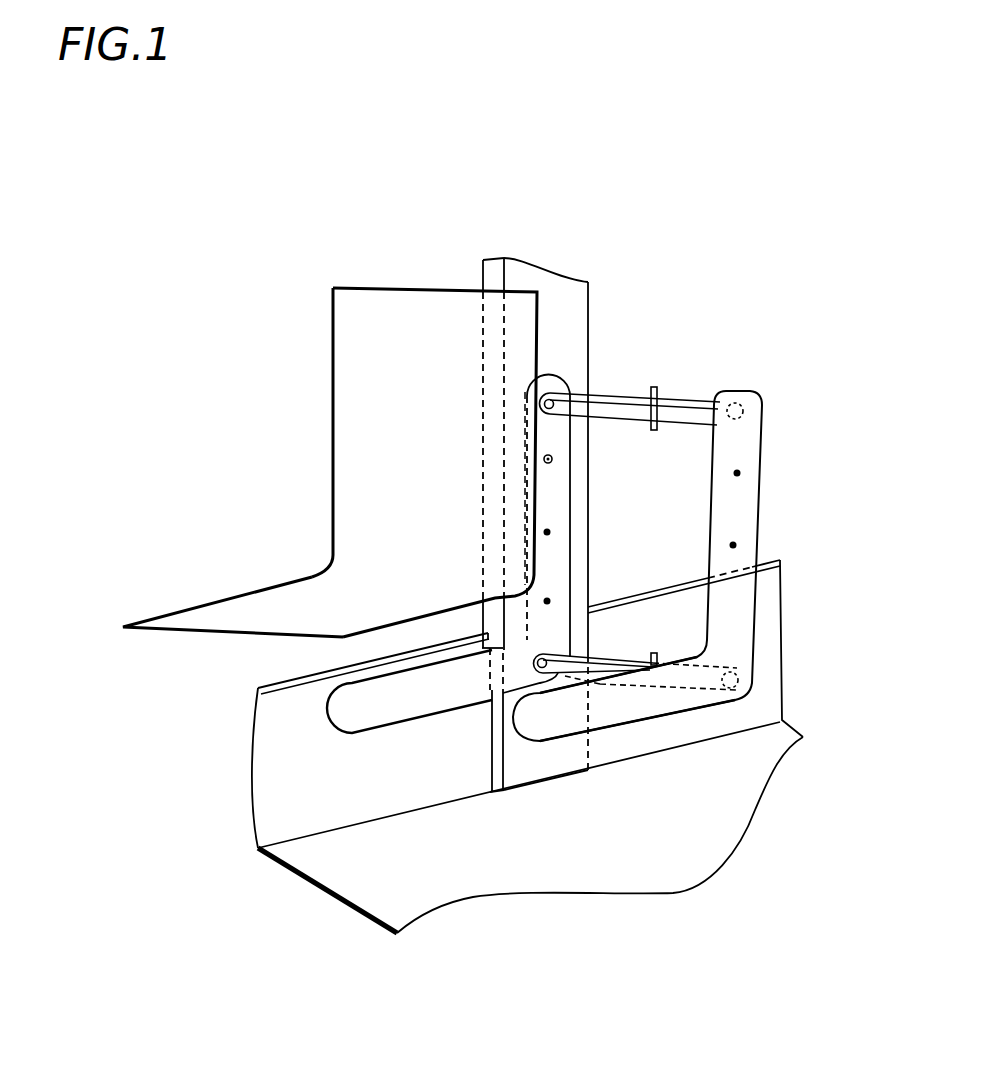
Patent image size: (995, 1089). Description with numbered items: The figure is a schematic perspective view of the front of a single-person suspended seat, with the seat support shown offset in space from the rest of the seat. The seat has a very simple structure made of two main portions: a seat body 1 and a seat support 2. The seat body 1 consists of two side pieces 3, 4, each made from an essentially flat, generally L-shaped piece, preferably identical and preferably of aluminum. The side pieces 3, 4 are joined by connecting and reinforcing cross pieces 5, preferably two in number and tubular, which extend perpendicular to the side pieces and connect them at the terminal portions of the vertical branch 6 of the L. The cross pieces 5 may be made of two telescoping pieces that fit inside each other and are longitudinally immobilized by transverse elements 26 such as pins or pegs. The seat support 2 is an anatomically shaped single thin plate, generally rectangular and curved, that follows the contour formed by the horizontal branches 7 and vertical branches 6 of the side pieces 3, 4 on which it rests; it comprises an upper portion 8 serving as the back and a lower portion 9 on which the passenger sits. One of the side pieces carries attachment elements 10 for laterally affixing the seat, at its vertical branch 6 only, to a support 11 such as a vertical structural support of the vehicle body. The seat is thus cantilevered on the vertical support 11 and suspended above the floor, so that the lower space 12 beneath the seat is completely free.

The seat body 1 is at (754, 716).
The seat support 2 is at (330, 462).
The side piece 3 is at (580, 587).
The side piece 4 is at (770, 540).
The connecting and reinforcing cross piece 5 is at (681, 394).
The vertical branch 6 is at (556, 384).
The horizontal branch 7 is at (372, 712).
The upper portion 8 is at (362, 332).
The lower portion 9 is at (253, 607).
The attachment elements 10 is at (553, 595).
The support 11 is at (594, 291).
The lower space 12 is at (597, 786).
The transverse element 26 is at (653, 390).